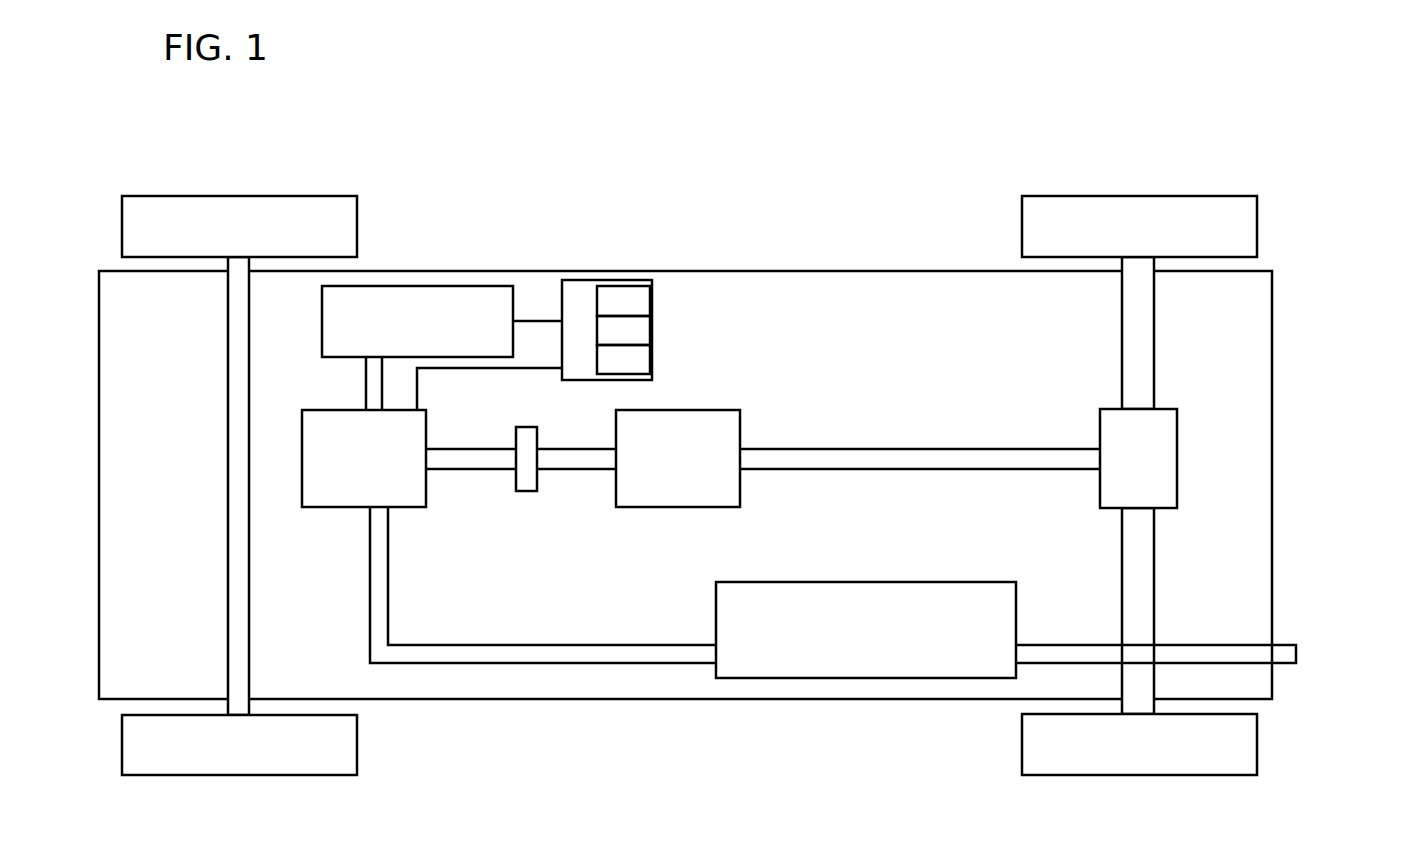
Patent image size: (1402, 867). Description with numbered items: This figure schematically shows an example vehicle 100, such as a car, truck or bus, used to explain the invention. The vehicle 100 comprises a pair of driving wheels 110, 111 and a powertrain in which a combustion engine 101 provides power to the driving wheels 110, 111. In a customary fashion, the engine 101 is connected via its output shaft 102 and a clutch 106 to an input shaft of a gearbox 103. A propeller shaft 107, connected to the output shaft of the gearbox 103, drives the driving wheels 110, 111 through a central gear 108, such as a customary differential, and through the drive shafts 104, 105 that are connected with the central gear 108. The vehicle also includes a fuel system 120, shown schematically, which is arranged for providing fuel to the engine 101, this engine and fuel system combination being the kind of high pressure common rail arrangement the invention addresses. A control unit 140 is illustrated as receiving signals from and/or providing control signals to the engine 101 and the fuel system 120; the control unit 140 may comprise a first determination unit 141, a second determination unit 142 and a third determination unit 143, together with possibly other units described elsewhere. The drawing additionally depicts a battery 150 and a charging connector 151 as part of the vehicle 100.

The vehicle 100 is at (586, 101).
The combustion engine 101 is at (338, 500).
The output shaft 102 is at (460, 462).
The gearbox 103 is at (680, 422).
The drive shaft 104 is at (1143, 331).
The drive shaft 105 is at (1148, 619).
The clutch 106 is at (529, 481).
The propeller shaft 107 is at (1017, 464).
The central gear 108 is at (1170, 453).
The driving wheel 110 is at (1250, 219).
The driving wheel 111 is at (1250, 749).
The fuel system 120 is at (442, 348).
The control unit 140 is at (589, 345).
The first determination unit 141 is at (623, 301).
The second determination unit 142 is at (623, 330).
The third determination unit 143 is at (623, 359).
The battery 150 is at (884, 672).
The charging connector 151 is at (1278, 655).